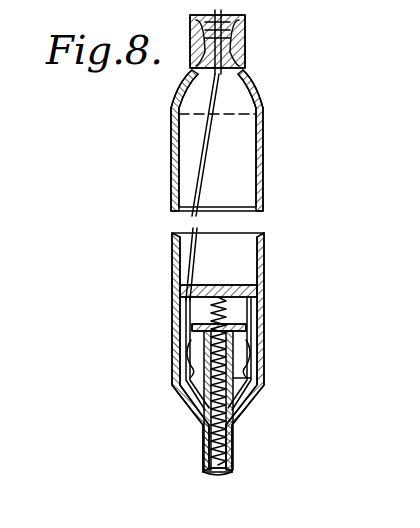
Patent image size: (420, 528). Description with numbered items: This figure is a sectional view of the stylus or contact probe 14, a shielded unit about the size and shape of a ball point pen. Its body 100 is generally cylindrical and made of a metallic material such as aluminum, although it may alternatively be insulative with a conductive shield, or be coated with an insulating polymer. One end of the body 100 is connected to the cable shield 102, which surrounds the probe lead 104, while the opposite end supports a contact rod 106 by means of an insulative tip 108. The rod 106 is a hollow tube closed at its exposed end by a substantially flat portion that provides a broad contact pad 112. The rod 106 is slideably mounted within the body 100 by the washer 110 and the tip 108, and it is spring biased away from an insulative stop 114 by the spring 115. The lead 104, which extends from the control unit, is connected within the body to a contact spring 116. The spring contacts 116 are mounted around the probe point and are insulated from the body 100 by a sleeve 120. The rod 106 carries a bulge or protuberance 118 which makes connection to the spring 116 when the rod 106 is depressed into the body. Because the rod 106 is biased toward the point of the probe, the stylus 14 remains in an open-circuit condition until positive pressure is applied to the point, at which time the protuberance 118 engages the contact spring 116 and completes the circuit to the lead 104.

The stylus 14 is at (296, 233).
The body 100 is at (172, 278).
The cable shield 102 is at (245, 42).
The probe lead 104 is at (216, 130).
The contact rod 106 is at (232, 445).
The insulative tip 108 is at (197, 418).
The washer 110 is at (260, 328).
The contact pad 112 is at (220, 474).
The insulative stop 114 is at (258, 282).
The spring 115 is at (192, 326).
The contact spring 116 is at (178, 372).
The protuberance 118 is at (250, 395).
The sleeve 120 is at (262, 350).